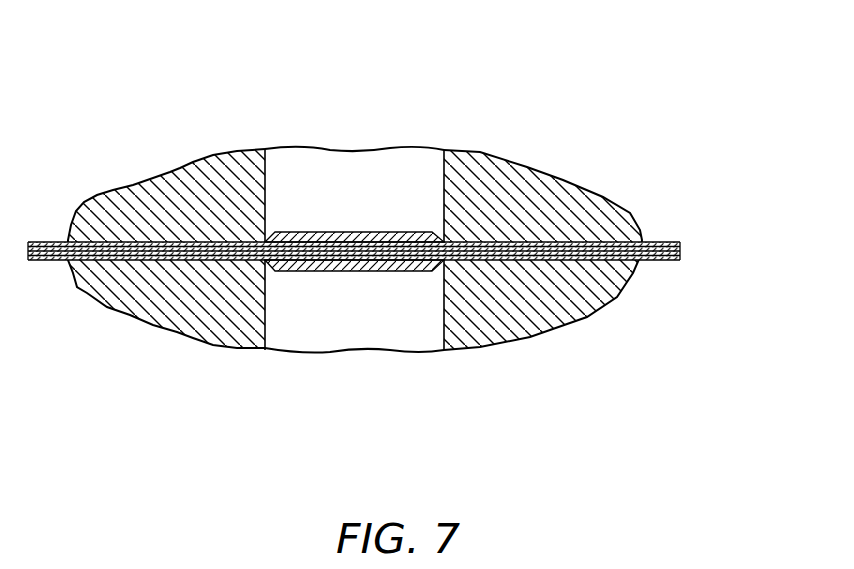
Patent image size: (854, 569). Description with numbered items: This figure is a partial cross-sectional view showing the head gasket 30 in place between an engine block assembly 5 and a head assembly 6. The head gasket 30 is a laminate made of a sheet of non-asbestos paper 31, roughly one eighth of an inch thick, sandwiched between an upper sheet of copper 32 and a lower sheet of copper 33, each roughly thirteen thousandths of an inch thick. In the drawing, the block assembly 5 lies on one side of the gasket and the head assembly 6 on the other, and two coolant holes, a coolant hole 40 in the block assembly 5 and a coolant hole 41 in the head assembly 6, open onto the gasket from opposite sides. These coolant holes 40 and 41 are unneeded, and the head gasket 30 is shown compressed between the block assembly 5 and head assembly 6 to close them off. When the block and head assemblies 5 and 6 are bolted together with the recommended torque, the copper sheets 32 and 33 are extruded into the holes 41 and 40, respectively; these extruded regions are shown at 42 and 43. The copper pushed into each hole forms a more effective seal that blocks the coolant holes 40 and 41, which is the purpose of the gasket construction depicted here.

The block assembly 5 is at (364, 238).
The head assembly 6 is at (505, 158).
The head gasket 30 is at (396, 250).
The sheet of non-asbestos paper 31 is at (680, 252).
The upper sheet of copper 32 is at (680, 242).
The lower sheet of copper 33 is at (677, 260).
The coolant hole 40 is at (299, 321).
The coolant hole 41 is at (305, 178).
The extruded copper portion 42 is at (347, 274).
The extruded copper portion 43 is at (348, 228).